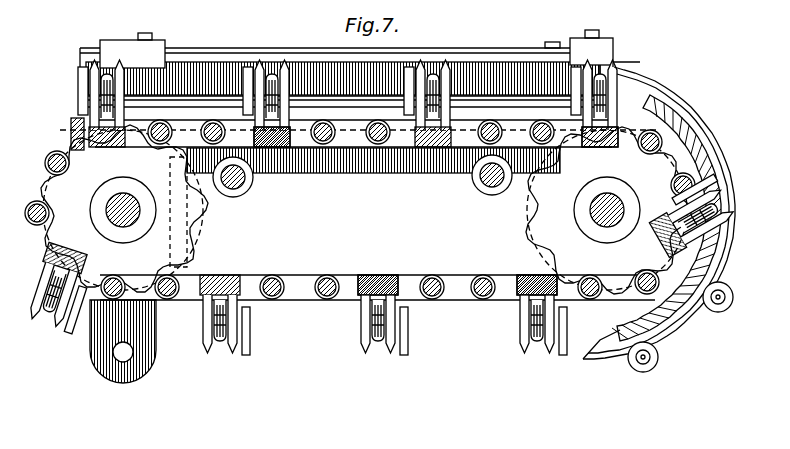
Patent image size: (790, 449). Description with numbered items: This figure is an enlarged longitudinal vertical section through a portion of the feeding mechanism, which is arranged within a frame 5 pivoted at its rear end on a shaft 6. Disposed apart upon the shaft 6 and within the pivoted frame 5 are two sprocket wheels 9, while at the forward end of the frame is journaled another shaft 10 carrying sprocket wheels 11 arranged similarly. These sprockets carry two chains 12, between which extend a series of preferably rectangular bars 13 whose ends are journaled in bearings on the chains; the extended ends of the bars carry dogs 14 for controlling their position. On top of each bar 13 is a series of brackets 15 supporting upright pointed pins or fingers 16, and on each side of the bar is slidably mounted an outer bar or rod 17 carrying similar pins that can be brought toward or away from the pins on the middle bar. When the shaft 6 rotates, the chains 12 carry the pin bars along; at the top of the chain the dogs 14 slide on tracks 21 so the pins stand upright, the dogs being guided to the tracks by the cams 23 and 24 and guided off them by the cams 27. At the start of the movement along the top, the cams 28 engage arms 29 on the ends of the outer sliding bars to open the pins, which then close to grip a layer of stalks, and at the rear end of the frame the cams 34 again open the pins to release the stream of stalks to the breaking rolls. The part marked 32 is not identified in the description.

The frame 5 is at (199, 76).
The shaft 6 is at (592, 208).
The sprocket wheels 9 is at (532, 232).
The shaft 10 is at (140, 214).
The sprocket wheels 11 is at (190, 249).
The chains 12 is at (298, 281).
The bars 13 is at (424, 150).
The dogs 14 is at (378, 345).
The brackets 15 is at (356, 302).
The pins or fingers 16 is at (204, 346).
The bar or rod 17 is at (274, 160).
The tracks 21 is at (560, 122).
The cam 23 is at (46, 254).
The cam 24 is at (69, 135).
The cams 27 is at (661, 217).
The cams 28 is at (113, 53).
The arms 29 is at (82, 76).
The holder block 32 is at (288, 123).
The cams 34 is at (598, 85).